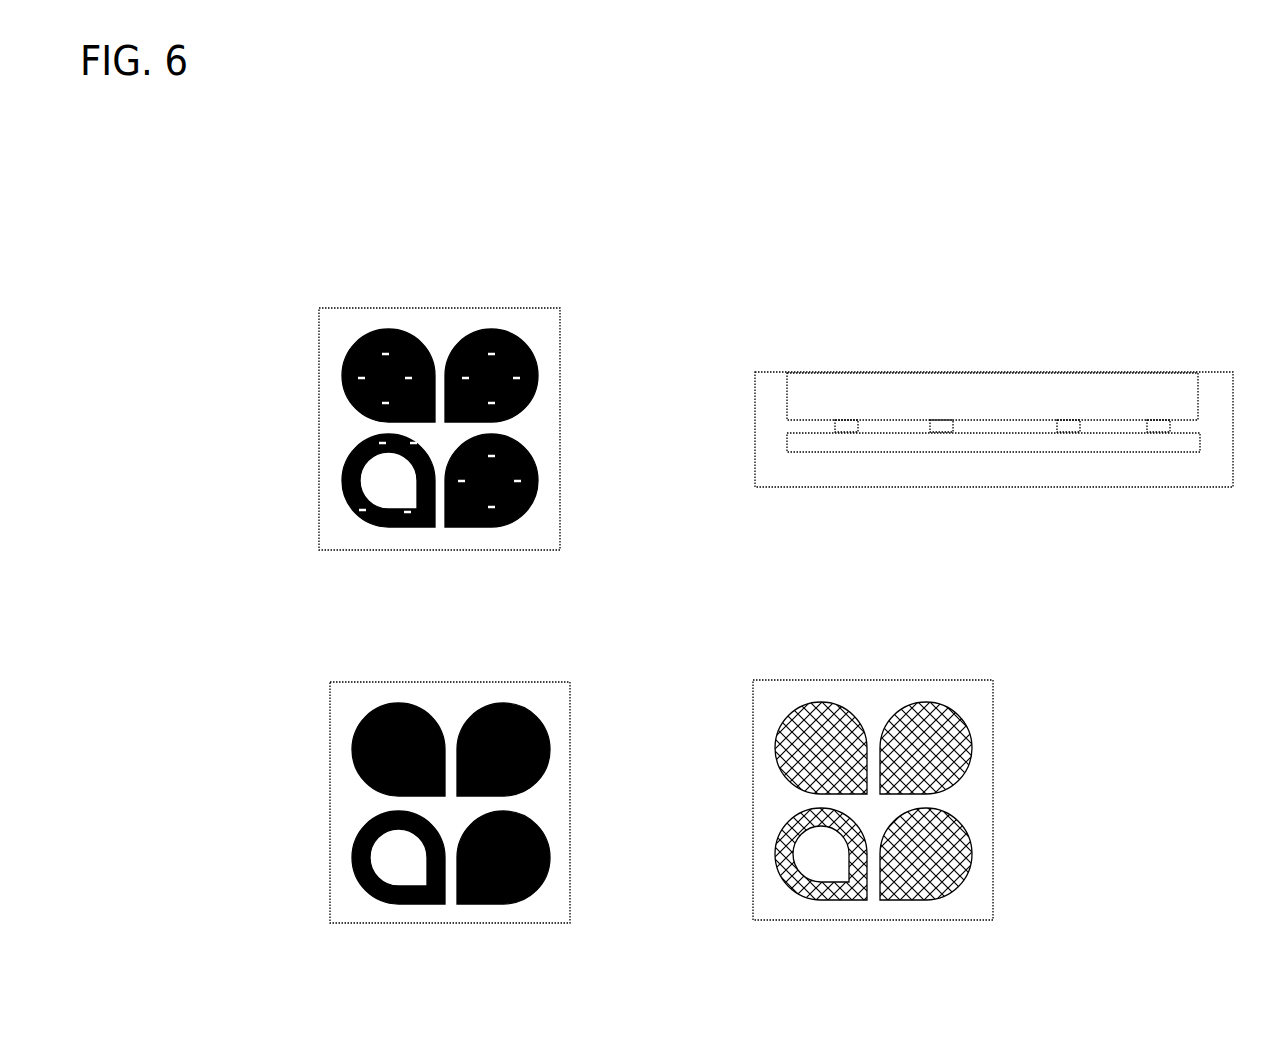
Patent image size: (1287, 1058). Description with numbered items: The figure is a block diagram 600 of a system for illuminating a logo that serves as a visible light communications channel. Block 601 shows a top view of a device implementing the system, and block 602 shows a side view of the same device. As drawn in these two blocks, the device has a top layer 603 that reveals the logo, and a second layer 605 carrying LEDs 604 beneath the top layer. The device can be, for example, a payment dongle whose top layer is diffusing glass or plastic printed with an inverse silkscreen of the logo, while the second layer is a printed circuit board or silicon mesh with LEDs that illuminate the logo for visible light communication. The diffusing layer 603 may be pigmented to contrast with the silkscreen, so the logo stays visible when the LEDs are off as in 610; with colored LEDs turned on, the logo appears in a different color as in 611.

The block diagram 600 is at (222, 227).
The top view block 601 is at (380, 283).
The side view block 602 is at (802, 308).
The top layer 603 is at (787, 395).
The LEDs 604 is at (835, 425).
The second layer 605 is at (1165, 450).
The LEDs off state 610 is at (382, 655).
The LEDs on state 611 is at (815, 653).